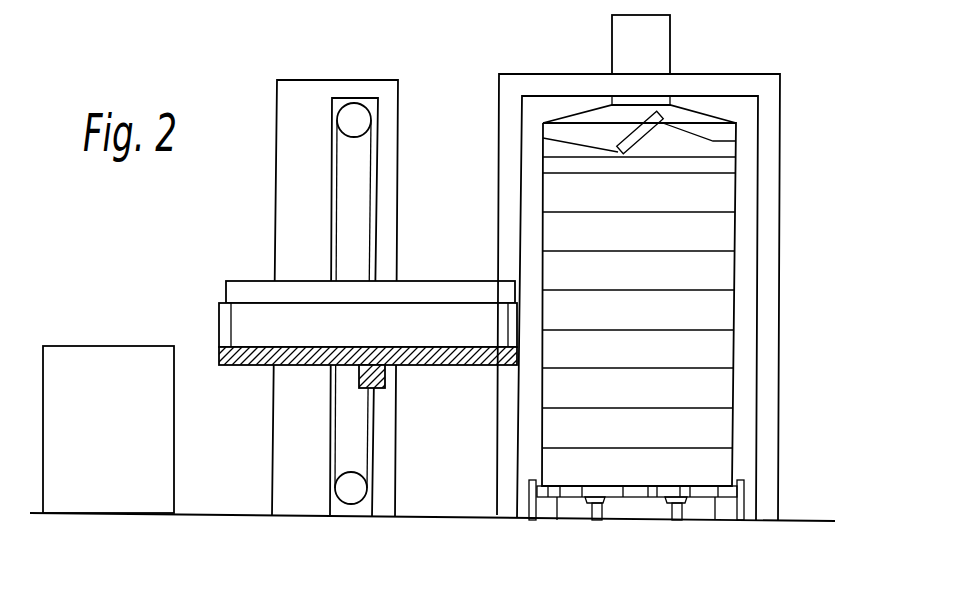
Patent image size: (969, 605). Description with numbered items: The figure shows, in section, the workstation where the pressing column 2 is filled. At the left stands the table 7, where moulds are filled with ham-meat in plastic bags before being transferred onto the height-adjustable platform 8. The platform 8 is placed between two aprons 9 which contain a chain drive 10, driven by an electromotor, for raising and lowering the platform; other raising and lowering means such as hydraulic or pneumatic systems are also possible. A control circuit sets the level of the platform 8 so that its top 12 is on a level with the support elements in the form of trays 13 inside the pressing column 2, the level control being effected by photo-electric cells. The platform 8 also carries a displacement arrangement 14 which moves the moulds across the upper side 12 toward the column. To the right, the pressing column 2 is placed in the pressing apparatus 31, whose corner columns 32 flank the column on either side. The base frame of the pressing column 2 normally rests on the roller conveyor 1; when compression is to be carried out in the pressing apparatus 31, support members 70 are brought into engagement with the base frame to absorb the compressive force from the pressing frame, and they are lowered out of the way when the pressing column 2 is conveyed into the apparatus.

The roller conveyor 1 is at (542, 507).
The pressing column 2 is at (735, 243).
The table 7 is at (82, 346).
The platform 8 is at (247, 366).
The aprons 9 is at (300, 148).
The chain drive 10 is at (337, 137).
The top of the platform 12 is at (300, 347).
The trays 13 is at (585, 250).
The displacement arrangement 14 is at (247, 281).
The pressing apparatus 31 is at (782, 100).
The corner columns 32 is at (497, 128).
The support member 70 is at (605, 505).